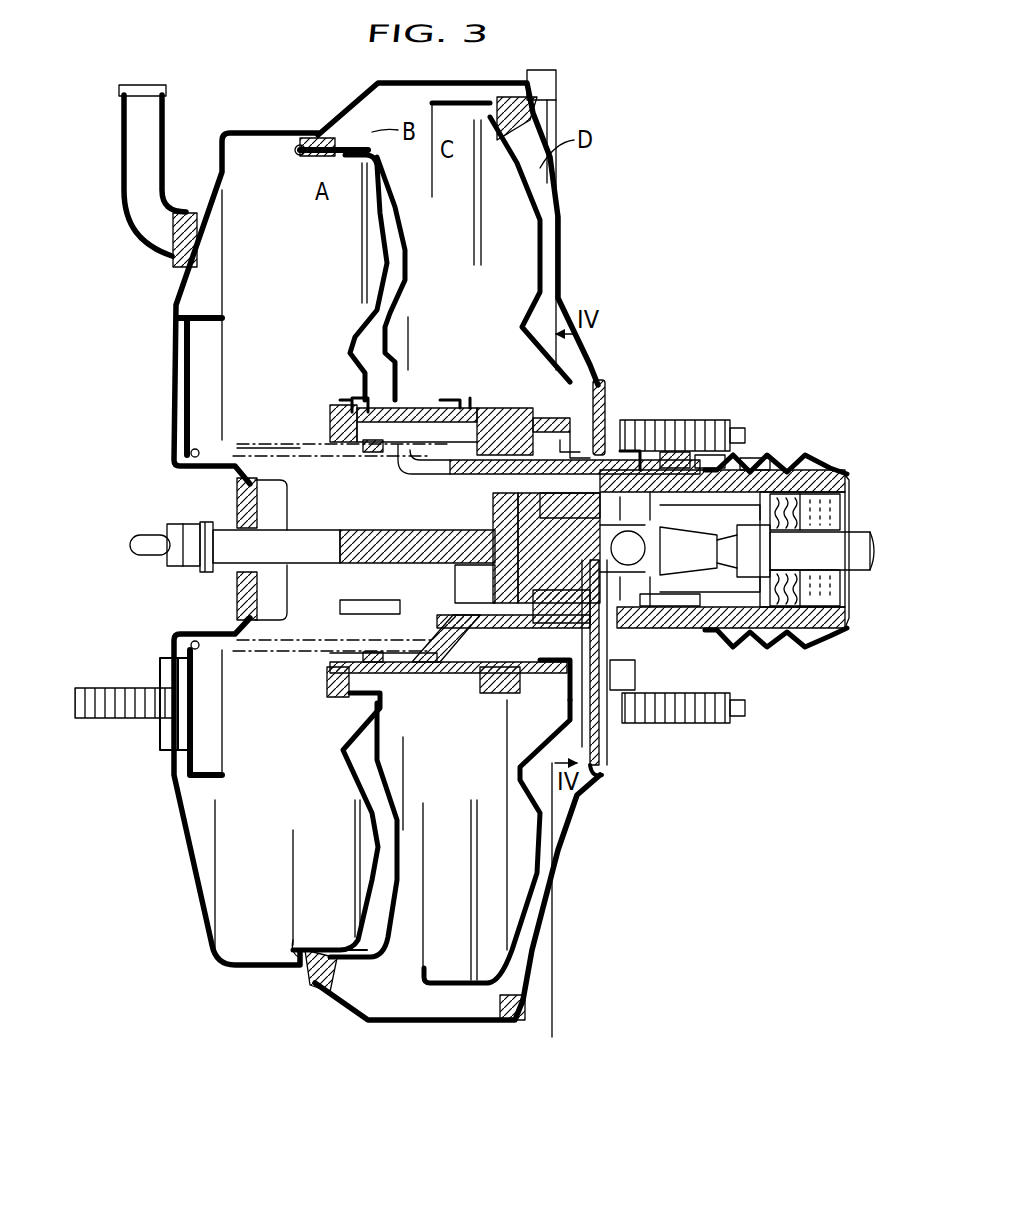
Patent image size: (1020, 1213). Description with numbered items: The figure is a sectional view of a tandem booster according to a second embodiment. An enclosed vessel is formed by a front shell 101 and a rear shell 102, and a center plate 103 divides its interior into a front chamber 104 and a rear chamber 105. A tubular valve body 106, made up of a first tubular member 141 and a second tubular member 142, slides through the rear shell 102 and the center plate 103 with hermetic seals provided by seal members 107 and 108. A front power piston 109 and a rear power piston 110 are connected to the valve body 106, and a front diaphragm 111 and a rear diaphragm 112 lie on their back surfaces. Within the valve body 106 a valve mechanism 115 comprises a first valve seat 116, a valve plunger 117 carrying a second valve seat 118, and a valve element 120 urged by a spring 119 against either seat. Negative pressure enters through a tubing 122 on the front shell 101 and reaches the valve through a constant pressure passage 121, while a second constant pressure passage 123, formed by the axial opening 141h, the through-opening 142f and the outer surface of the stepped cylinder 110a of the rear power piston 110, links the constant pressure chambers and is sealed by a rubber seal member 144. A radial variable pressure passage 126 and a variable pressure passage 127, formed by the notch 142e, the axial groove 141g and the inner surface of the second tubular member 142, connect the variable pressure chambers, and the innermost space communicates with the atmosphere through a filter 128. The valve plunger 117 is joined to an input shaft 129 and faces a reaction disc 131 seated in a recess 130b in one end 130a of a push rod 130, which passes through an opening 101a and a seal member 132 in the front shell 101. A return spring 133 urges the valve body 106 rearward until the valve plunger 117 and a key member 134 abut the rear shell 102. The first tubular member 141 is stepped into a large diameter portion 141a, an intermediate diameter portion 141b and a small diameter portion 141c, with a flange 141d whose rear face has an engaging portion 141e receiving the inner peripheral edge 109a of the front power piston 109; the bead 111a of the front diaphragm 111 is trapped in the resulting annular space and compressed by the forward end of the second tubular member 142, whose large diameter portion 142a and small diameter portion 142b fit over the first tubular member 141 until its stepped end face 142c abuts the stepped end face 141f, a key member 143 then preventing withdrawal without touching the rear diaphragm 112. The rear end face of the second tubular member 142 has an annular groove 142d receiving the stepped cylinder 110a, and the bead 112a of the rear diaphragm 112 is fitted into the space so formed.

The front shell 101 is at (205, 905).
The opening 101a is at (245, 476).
The rear shell 102 is at (575, 830).
The center plate 103 is at (384, 940).
The front chamber 104 is at (285, 248).
The rear chamber 105 is at (462, 230).
The valve body 106 is at (322, 692).
The annular seal member 107 is at (420, 402).
The annular seal member 108 is at (692, 420).
The front power piston 109 is at (372, 845).
The inner peripheral edge 109a is at (332, 420).
The rear power piston 110 is at (535, 838).
The stepped cylinder 110a is at (510, 712).
The front diaphragm 111 is at (312, 985).
The bead 111a is at (372, 455).
The rear diaphragm 112 is at (450, 980).
The bead 112a is at (455, 652).
The valve mechanism 115 is at (742, 637).
The first valve seat 116 is at (675, 452).
The valve plunger 117 is at (525, 565).
The second valve seat 118 is at (762, 548).
The spring 119 is at (760, 458).
The valve element 120 is at (705, 455).
The constant pressure passage 121 is at (570, 513).
The tubing 122 is at (126, 206).
The second constant pressure passage 123 is at (358, 614).
The variable pressure passage 126 is at (658, 612).
The variable pressure passage 127 is at (495, 406).
The filter 128 is at (812, 495).
The input shaft 129 is at (860, 538).
The push rod 130 is at (235, 528).
The end of push rod 130a is at (392, 545).
The recess 130b is at (490, 522).
The reaction disc 131 is at (458, 578).
The seal member 132 is at (238, 578).
The return spring 133 is at (262, 452).
The key member 134 is at (690, 722).
The first tubular member 141 is at (280, 400).
The large diameter portion 141a is at (470, 398).
The intermediate diameter portion 141b is at (628, 450).
The small diameter portion 141c is at (780, 455).
The flange 141d is at (320, 400).
The engaging portion 141e is at (355, 400).
The stepped end face 141f is at (485, 440).
The axial groove 141g is at (448, 400).
The axial opening 141h is at (330, 668).
The second tubular member 142 is at (603, 380).
The large diameter portion 142a is at (405, 470).
The small diameter portion 142b is at (559, 548).
The stepped end face 142c is at (460, 474).
The annular groove 142d is at (602, 770).
The notch 142e is at (365, 340).
The through-opening 142f is at (540, 690).
The key member 143 is at (625, 690).
The rubber seal member 144 is at (478, 682).